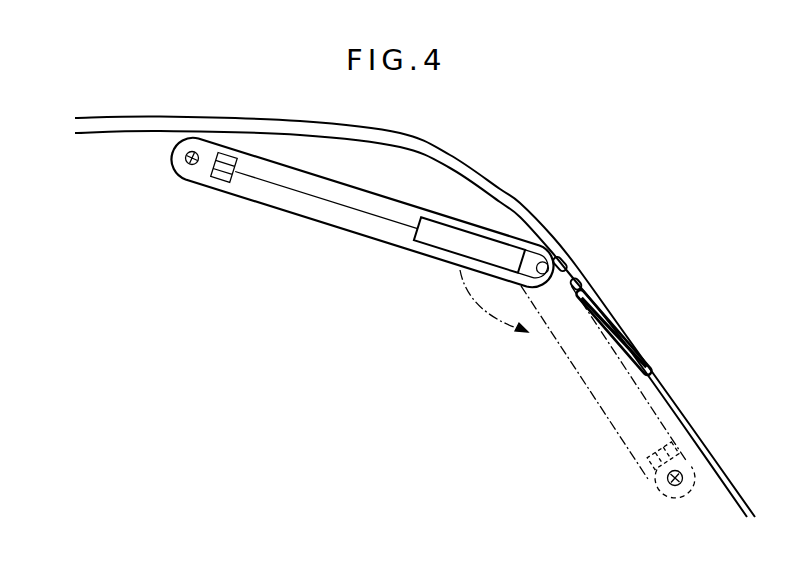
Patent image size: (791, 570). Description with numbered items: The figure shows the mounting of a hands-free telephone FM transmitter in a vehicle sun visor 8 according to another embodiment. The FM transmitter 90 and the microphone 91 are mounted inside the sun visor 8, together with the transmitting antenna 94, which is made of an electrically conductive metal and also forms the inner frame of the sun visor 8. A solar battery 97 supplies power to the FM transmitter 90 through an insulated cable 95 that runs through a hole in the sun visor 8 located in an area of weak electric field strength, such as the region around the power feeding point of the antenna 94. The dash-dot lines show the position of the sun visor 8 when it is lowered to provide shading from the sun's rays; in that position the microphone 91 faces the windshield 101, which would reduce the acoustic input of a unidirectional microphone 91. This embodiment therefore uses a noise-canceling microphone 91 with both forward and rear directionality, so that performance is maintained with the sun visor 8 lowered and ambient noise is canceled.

The sun visor 8 is at (270, 205).
The FM transmitter 90 is at (453, 244).
The microphone 91 is at (219, 181).
The transmitting antenna 94 is at (186, 164).
The insulated cable 95 is at (573, 288).
The solar battery 97 is at (620, 348).
The windshield 101 is at (622, 326).